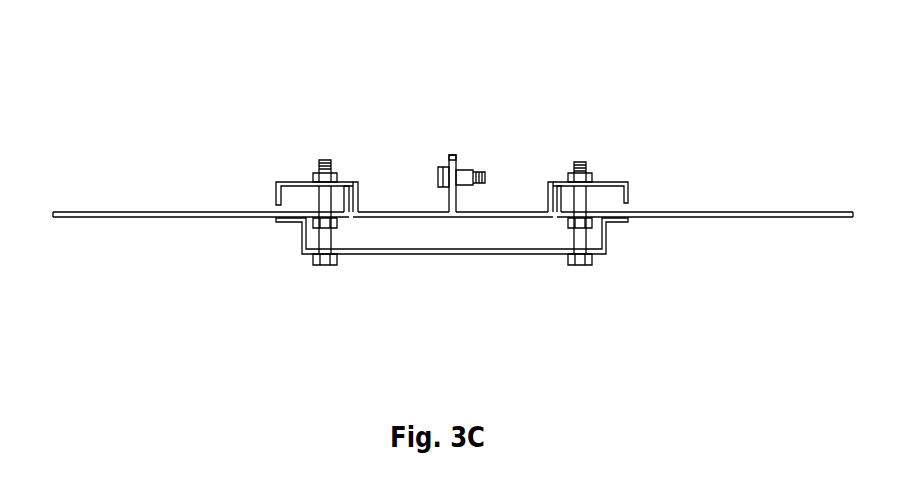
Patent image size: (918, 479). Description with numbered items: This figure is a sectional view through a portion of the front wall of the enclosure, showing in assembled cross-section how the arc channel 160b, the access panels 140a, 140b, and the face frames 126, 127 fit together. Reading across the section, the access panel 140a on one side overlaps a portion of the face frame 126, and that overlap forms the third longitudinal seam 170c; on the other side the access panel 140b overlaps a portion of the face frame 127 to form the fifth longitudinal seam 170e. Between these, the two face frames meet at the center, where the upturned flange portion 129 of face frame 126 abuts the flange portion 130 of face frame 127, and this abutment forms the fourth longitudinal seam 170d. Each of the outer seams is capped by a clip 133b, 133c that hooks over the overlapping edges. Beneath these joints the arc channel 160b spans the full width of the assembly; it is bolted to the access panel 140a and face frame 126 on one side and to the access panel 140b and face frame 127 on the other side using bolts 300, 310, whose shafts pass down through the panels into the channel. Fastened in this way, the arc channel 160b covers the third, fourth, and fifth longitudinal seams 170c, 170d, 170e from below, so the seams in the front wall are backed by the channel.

The access panel 140a is at (142, 213).
The access panel 140b is at (715, 213).
The face frame 126 is at (413, 212).
The face frame 127 is at (493, 212).
The flange portion 129 is at (448, 153).
The flange portion 130 is at (460, 150).
The first clip 133b is at (292, 182).
The second clip 133c is at (613, 180).
The third longitudinal seam 170c is at (347, 182).
The fourth longitudinal seam 170d is at (452, 153).
The fifth longitudinal seam 170e is at (556, 182).
The arc channel 160b is at (457, 252).
The bolt 300 is at (325, 266).
The bolt 310 is at (322, 223).